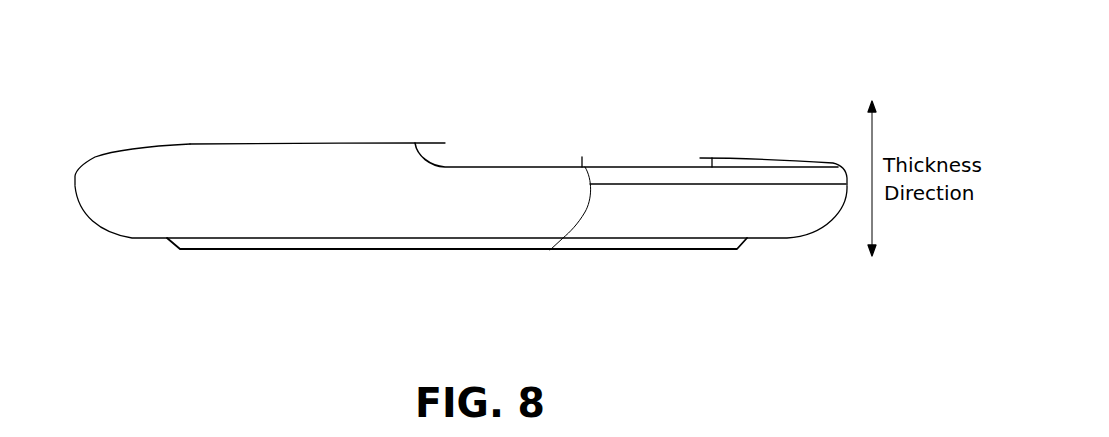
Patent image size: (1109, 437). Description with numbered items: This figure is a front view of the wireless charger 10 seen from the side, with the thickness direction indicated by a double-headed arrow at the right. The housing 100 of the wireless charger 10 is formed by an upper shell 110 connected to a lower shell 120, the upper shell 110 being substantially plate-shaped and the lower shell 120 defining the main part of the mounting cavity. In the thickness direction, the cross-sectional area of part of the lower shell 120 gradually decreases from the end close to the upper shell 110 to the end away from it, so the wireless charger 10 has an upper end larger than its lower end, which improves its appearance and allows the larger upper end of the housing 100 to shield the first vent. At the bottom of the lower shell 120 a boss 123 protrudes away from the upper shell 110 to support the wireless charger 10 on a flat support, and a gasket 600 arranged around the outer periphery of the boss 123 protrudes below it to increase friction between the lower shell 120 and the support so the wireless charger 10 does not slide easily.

The wireless charger 10 is at (461, 184).
The housing 100 is at (365, 150).
The upper shell 110 is at (107, 170).
The lower shell 120 is at (125, 219).
The boss 123 is at (316, 242).
The gasket 600 is at (222, 245).